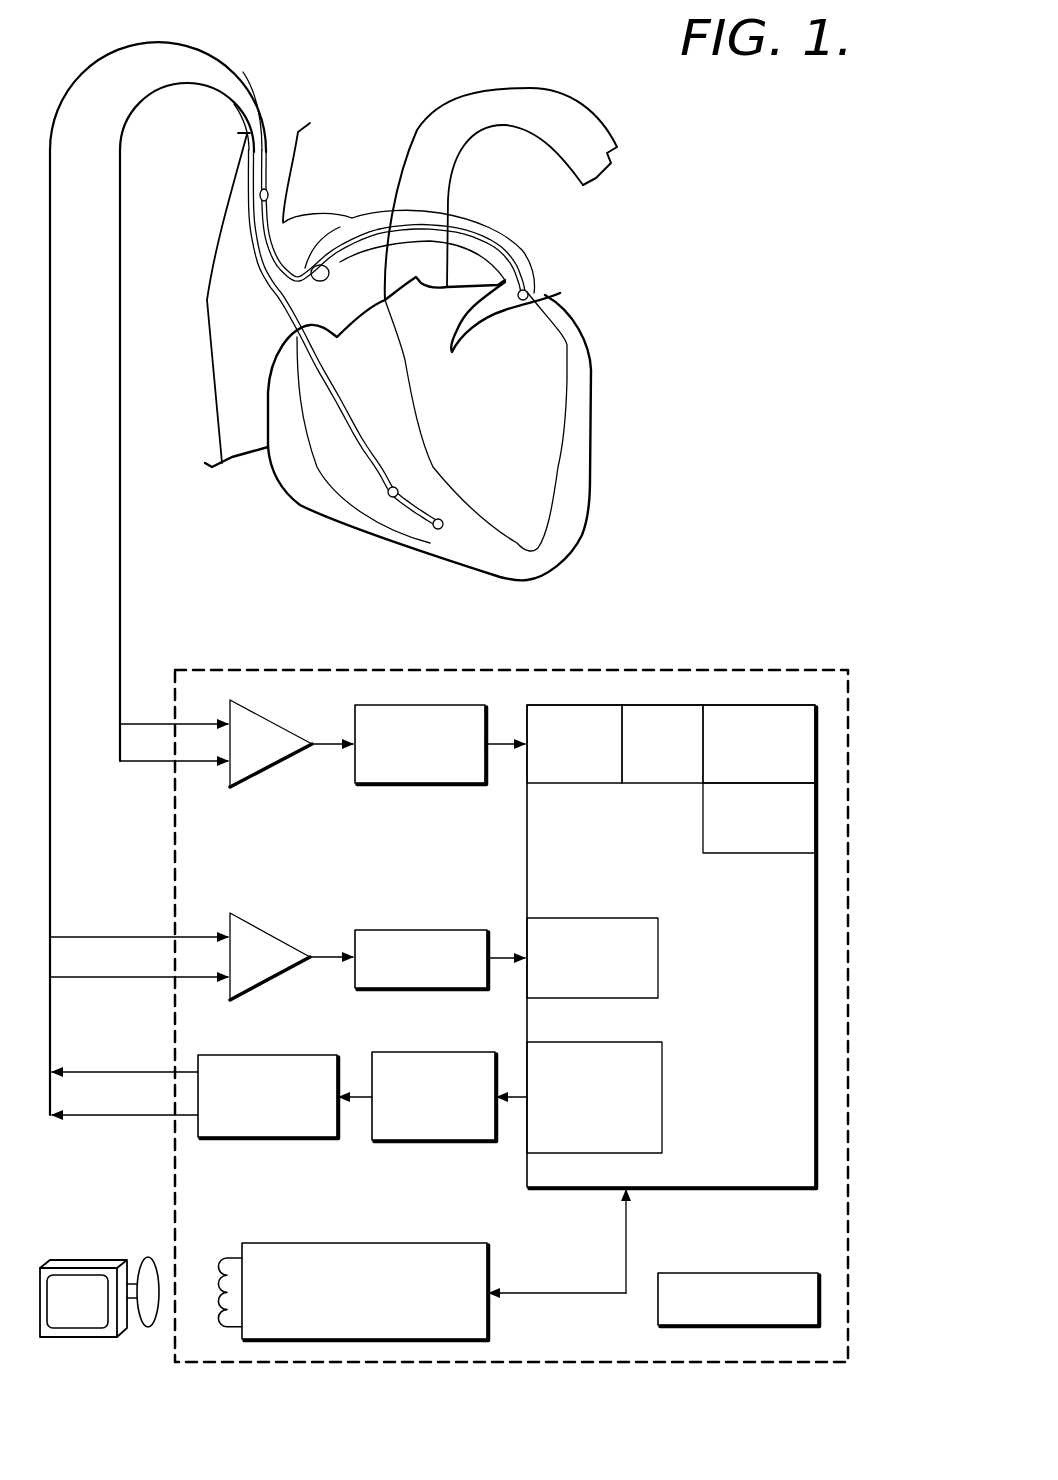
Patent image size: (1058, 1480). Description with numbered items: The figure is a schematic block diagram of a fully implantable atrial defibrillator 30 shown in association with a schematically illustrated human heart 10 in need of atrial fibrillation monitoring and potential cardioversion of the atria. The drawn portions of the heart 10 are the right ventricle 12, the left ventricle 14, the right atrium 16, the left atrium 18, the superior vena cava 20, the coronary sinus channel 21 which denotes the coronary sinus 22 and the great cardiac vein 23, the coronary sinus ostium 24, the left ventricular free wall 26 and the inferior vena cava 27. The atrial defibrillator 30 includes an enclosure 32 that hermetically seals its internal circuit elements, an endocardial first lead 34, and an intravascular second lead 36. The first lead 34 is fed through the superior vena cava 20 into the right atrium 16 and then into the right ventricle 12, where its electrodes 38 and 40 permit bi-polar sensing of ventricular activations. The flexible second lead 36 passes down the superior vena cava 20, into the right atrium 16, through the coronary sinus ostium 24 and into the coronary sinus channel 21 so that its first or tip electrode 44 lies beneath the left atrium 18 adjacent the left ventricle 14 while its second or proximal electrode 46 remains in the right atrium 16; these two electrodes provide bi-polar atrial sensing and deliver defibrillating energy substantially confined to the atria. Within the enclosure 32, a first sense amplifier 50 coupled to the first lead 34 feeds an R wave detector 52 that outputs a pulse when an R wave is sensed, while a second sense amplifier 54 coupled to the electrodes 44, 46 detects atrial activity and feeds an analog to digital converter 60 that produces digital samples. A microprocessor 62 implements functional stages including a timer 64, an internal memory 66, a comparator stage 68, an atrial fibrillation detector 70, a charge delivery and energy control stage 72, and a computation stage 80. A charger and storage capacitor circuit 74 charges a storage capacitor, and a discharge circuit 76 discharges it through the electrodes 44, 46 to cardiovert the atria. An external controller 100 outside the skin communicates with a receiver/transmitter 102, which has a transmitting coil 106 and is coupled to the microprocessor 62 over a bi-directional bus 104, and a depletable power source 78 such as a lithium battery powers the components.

The heart 10 is at (880, 182).
The right ventricle 12 is at (328, 428).
The left ventricle 14 is at (525, 517).
The right atrium 16 is at (240, 262).
The left atrium 18 is at (467, 207).
The superior vena cava 20 is at (283, 157).
The coronary sinus channel 21 is at (424, 197).
The coronary sinus 22 is at (370, 222).
The great cardiac vein 23 is at (530, 272).
The coronary sinus ostium 24 is at (325, 274).
The left ventricular free wall 26 is at (563, 297).
The inferior vena cava 27 is at (243, 406).
The atrial defibrillator 30 is at (873, 604).
The enclosure 32 is at (530, 668).
The endocardial first lead 34 is at (120, 620).
The intravascular second lead 36 is at (50, 577).
The electrode 38 is at (438, 530).
The electrode 40 is at (392, 498).
The first or tip electrode 44 is at (527, 303).
The second or proximal electrode 46 is at (259, 195).
The first sense amplifier 50 is at (277, 724).
The R wave detector 52 is at (427, 785).
The second sense amplifier 54 is at (278, 938).
The analog to digital converter 60 is at (422, 990).
The microprocessor 62 is at (768, 1188).
The timer 64 is at (580, 705).
The internal memory 66 is at (665, 705).
The comparator stage 68 is at (758, 705).
The atrial fibrillation detector 70 is at (599, 918).
The charge delivery and energy control stage 72 is at (662, 1097).
The charger and storage capacitor circuit 74 is at (425, 1141).
The discharge circuit 76 is at (263, 1138).
The depletable power source 78 is at (742, 1273).
The computation stage 80 is at (780, 853).
The external controller 100 is at (75, 1265).
The receiver/transmitter 102 is at (347, 1243).
The bi-directional bus 104 is at (552, 1293).
The transmitting coil 106 is at (223, 1258).